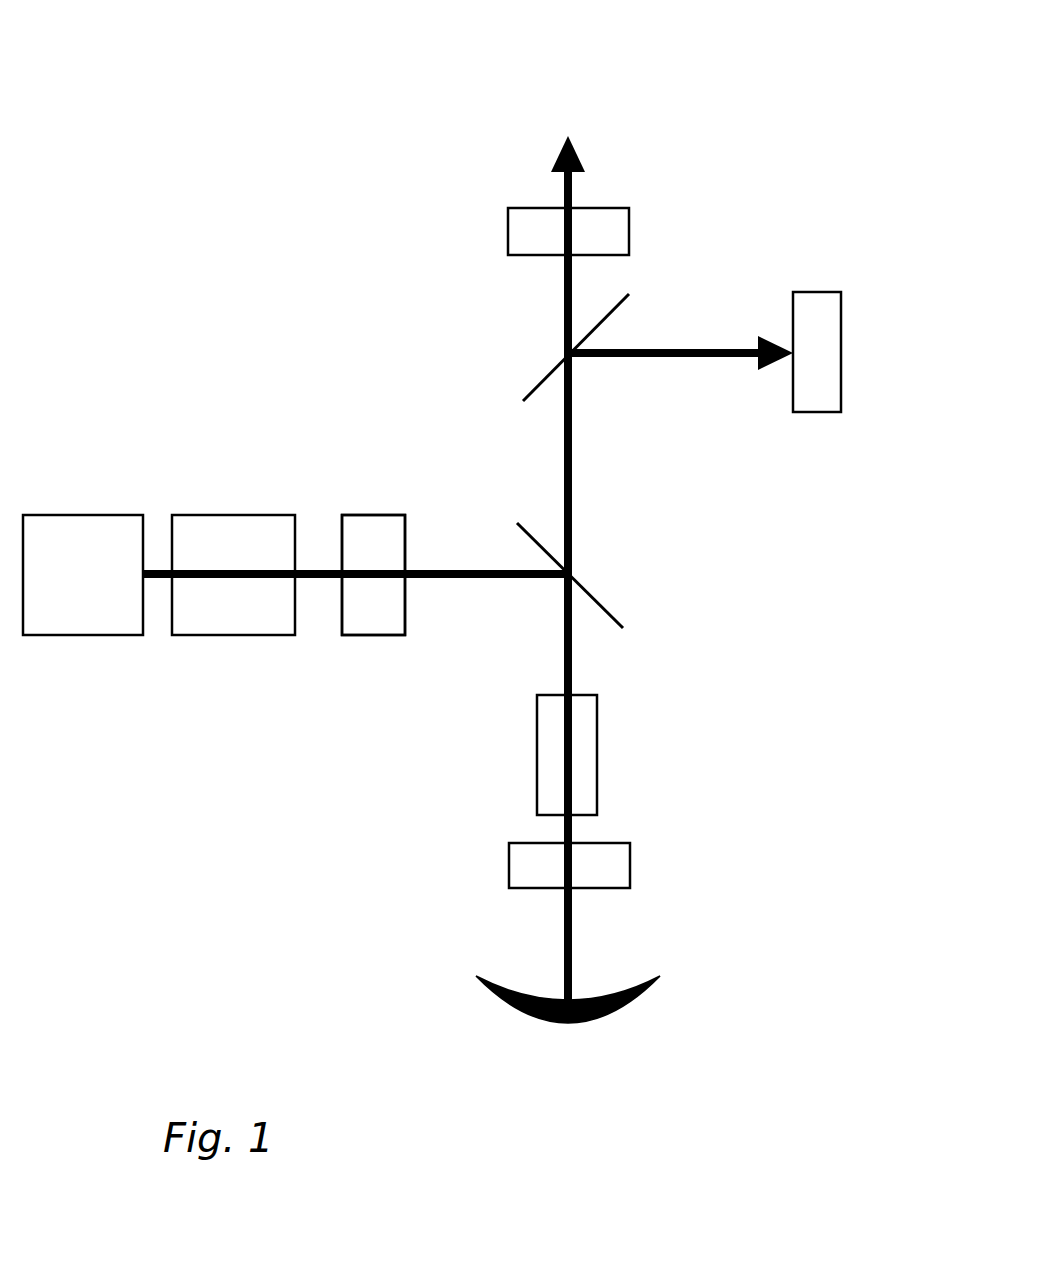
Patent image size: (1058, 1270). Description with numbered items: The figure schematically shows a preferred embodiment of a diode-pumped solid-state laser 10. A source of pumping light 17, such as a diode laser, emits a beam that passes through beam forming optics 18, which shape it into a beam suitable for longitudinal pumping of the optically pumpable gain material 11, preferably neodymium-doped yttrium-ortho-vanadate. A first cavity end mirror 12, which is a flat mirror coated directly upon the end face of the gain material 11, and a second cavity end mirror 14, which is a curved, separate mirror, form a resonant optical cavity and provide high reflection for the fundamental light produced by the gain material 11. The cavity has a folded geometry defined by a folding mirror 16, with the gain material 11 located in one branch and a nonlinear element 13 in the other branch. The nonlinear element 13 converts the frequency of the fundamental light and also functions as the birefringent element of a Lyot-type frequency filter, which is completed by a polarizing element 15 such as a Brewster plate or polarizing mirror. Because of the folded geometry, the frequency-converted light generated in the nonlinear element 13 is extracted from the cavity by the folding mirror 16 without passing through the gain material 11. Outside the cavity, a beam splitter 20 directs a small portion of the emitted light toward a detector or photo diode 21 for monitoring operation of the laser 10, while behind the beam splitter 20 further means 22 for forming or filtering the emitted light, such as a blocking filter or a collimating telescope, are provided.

The diode-pumped solid-state laser 10 is at (258, 238).
The optically pumpable gain material 11 is at (358, 598).
The first cavity end mirror 12 is at (340, 537).
The nonlinear element 13 is at (585, 758).
The second cavity end mirror 14 is at (612, 1017).
The polarizing element 15 is at (607, 867).
The folding mirror 16 is at (595, 595).
The source of pumping light 17 is at (84, 599).
The beam forming optics 18 is at (217, 602).
The beam splitter 20 is at (540, 390).
The detector or photo diode 21 is at (828, 385).
The means for forming or filtering the emitted light 22 is at (585, 225).